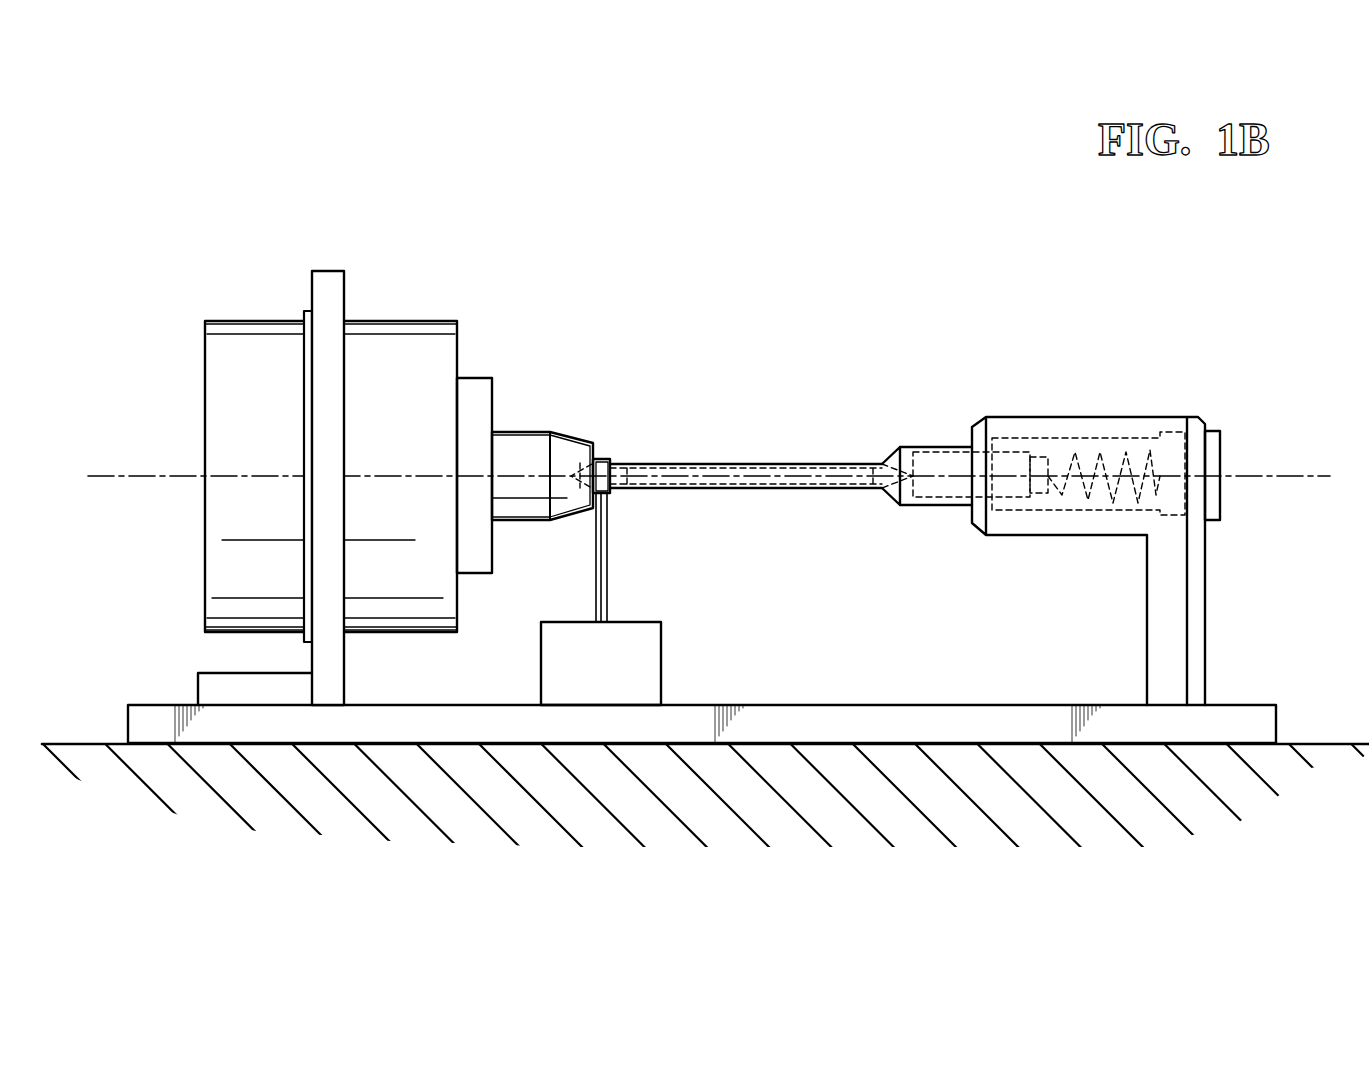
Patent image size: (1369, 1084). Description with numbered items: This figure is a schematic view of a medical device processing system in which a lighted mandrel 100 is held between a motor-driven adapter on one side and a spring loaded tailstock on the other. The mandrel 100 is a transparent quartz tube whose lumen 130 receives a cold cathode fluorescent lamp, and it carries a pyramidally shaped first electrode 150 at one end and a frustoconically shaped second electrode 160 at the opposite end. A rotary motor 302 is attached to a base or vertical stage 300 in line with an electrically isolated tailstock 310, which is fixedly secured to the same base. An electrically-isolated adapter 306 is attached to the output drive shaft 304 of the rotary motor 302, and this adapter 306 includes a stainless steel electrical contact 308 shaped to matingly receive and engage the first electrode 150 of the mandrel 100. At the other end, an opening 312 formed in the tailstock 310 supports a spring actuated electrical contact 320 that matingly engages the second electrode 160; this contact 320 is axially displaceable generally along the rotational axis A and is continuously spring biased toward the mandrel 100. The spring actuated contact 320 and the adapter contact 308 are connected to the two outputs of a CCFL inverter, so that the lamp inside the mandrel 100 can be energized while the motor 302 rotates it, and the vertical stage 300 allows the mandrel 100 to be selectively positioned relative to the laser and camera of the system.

The lighted mandrel 100 is at (712, 482).
The lumen 130 is at (710, 467).
The first electrode 150 is at (580, 488).
The second electrode 160 is at (882, 462).
The vertical stage 300 is at (944, 730).
The rotary motor 302 is at (382, 350).
The output drive shaft 304 is at (483, 377).
The electrically-isolated adapter 306 is at (570, 450).
The electrical contact 308 is at (596, 447).
The tailstock 310 is at (1067, 417).
The opening 312 is at (1125, 440).
The spring actuated electrical contact 320 is at (947, 446).
The rotational axis A is at (1283, 475).